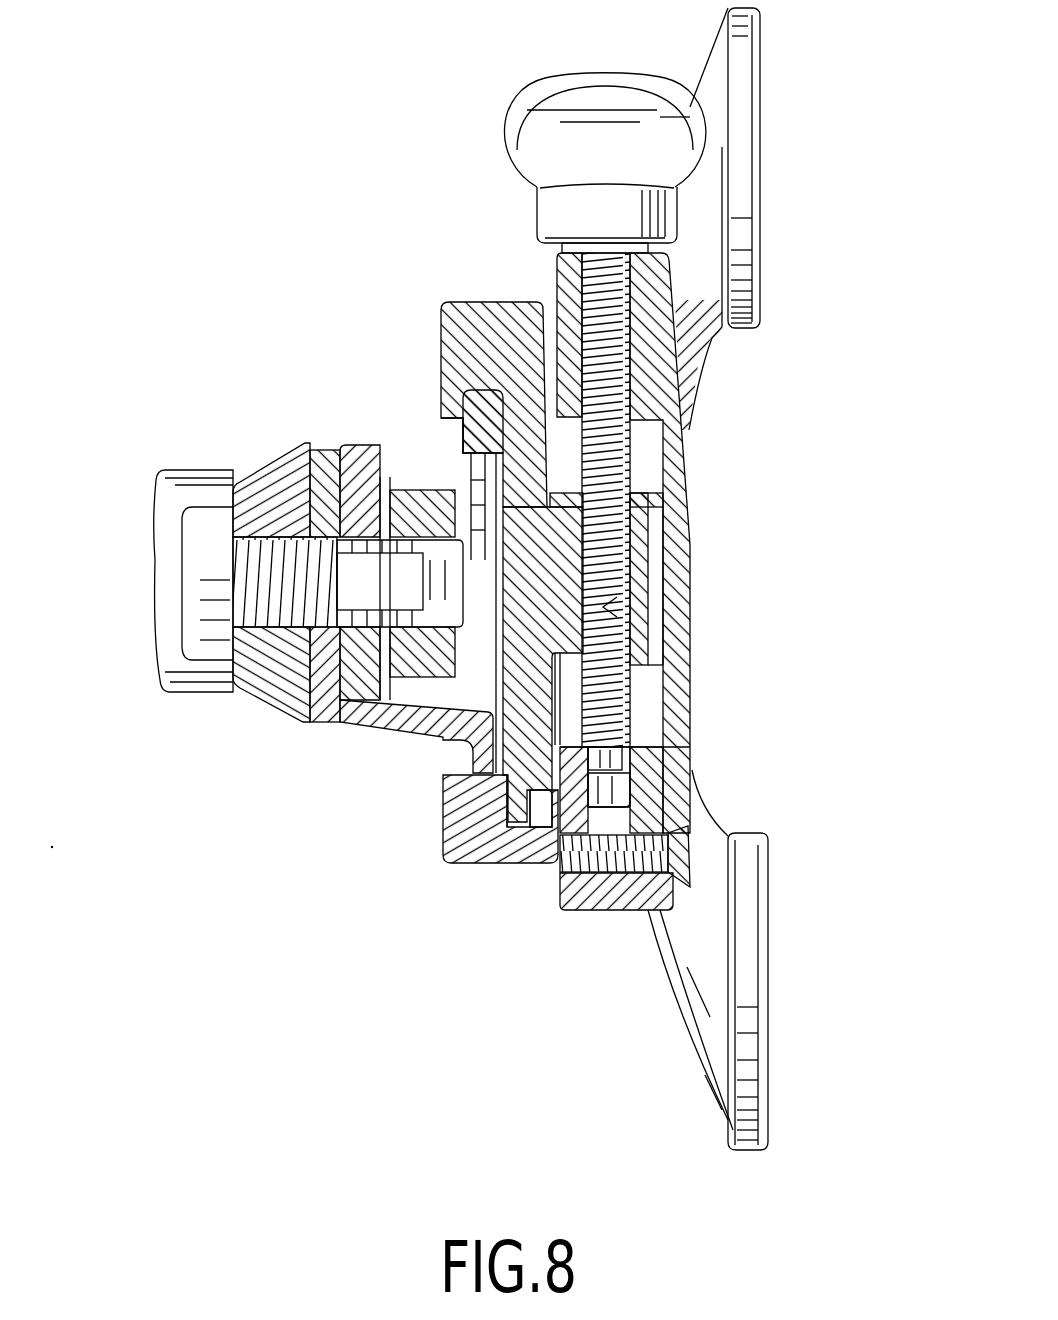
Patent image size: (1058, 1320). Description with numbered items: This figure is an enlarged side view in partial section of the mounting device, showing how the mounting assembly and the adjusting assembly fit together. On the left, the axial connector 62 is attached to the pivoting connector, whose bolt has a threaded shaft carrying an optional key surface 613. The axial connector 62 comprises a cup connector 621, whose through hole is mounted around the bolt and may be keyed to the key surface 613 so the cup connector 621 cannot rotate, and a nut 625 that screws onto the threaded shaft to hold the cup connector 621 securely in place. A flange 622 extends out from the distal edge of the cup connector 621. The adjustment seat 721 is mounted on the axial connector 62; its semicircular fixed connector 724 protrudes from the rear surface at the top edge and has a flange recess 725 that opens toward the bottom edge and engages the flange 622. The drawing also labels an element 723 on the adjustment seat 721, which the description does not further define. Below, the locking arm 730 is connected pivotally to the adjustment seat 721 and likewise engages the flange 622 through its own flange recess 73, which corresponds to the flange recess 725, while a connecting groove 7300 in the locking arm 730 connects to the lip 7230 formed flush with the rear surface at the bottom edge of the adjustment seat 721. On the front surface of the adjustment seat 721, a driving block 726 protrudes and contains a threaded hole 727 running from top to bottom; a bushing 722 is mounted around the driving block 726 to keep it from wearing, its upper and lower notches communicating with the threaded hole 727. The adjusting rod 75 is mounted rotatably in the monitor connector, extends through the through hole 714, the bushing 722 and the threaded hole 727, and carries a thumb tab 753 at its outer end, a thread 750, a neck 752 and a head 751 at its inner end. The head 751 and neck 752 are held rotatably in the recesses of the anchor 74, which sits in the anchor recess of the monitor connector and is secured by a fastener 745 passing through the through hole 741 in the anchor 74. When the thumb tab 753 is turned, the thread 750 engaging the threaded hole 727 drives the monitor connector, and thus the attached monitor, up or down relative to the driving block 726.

The axial connector 62 is at (352, 557).
The key surface 613 is at (200, 598).
The cup connector 621 is at (415, 490).
The flange 622 is at (483, 403).
The nut 625 is at (355, 445).
The adjustment seat 721 is at (438, 364).
The bushing 722 is at (665, 544).
The plate 723 is at (520, 480).
The fixed connector 724 is at (445, 308).
The flange recess 725 is at (465, 383).
The driving block 726 is at (640, 572).
The threaded hole 727 is at (615, 610).
The flange recess 73 is at (470, 770).
The locking arm 730 is at (449, 830).
The lip 7230 is at (470, 810).
The connecting groove 7300 is at (450, 828).
The through hole 714 is at (592, 258).
The adjusting rod 75 is at (681, 511).
The thread 750 is at (622, 466).
The head 751 is at (628, 787).
The neck 752 is at (628, 748).
The thumb tab 753 is at (590, 100).
The anchor 74 is at (688, 904).
The through hole 741 is at (660, 850).
The fastener 745 is at (690, 858).